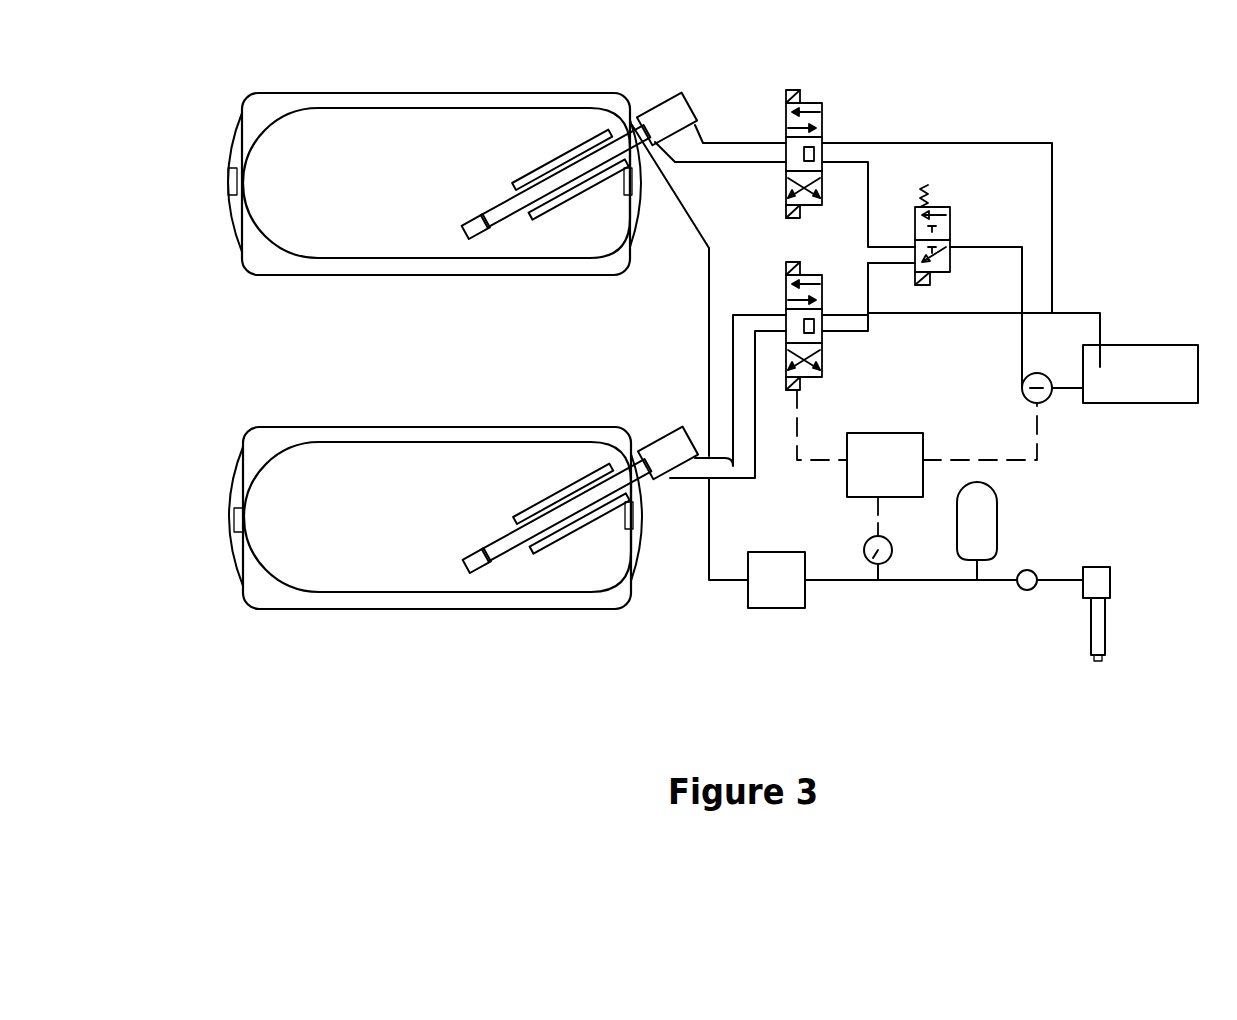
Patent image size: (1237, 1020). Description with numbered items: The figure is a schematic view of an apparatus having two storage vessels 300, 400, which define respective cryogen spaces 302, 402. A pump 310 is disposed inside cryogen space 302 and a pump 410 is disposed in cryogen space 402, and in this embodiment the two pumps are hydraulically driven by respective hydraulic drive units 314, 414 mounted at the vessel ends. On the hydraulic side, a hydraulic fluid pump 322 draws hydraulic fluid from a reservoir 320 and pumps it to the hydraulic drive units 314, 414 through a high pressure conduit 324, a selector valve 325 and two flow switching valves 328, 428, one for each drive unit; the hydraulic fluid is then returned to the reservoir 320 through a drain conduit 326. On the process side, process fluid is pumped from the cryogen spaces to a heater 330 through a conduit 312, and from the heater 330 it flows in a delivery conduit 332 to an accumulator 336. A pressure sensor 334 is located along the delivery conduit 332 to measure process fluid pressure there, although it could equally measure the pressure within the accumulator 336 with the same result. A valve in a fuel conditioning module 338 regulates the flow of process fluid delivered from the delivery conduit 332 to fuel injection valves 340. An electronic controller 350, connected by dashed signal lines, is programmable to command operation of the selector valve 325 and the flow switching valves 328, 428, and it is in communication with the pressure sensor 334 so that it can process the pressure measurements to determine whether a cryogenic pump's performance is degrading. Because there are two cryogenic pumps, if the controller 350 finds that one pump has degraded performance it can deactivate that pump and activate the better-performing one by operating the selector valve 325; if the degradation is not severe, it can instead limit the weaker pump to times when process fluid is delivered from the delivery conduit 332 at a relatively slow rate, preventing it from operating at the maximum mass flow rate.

The storage vessel 300 is at (378, 610).
The cryogen space 302 is at (430, 539).
The pump 310 is at (513, 532).
The conduit 312 is at (727, 583).
The hydraulic drive unit 314 is at (674, 434).
The reservoir 320 is at (1112, 392).
The hydraulic fluid pump 322 is at (1040, 398).
The high pressure conduit 324 is at (1010, 245).
The selector valve 325 is at (940, 205).
The drain conduit 326 is at (1067, 314).
The flow switching valve 328 is at (797, 262).
The heater 330 is at (778, 590).
The delivery conduit 332 is at (825, 587).
The pressure sensor 334 is at (863, 587).
The accumulator 336 is at (985, 515).
The fuel conditioning module 338 is at (1027, 591).
The fuel injection valves 340 is at (1100, 585).
The electronic controller 350 is at (914, 486).
The storage vessel 400 is at (376, 278).
The cryogen space 402 is at (428, 204).
The pump 410 is at (512, 198).
The hydraulic drive unit 414 is at (673, 100).
The flow switching valve 428 is at (797, 89).